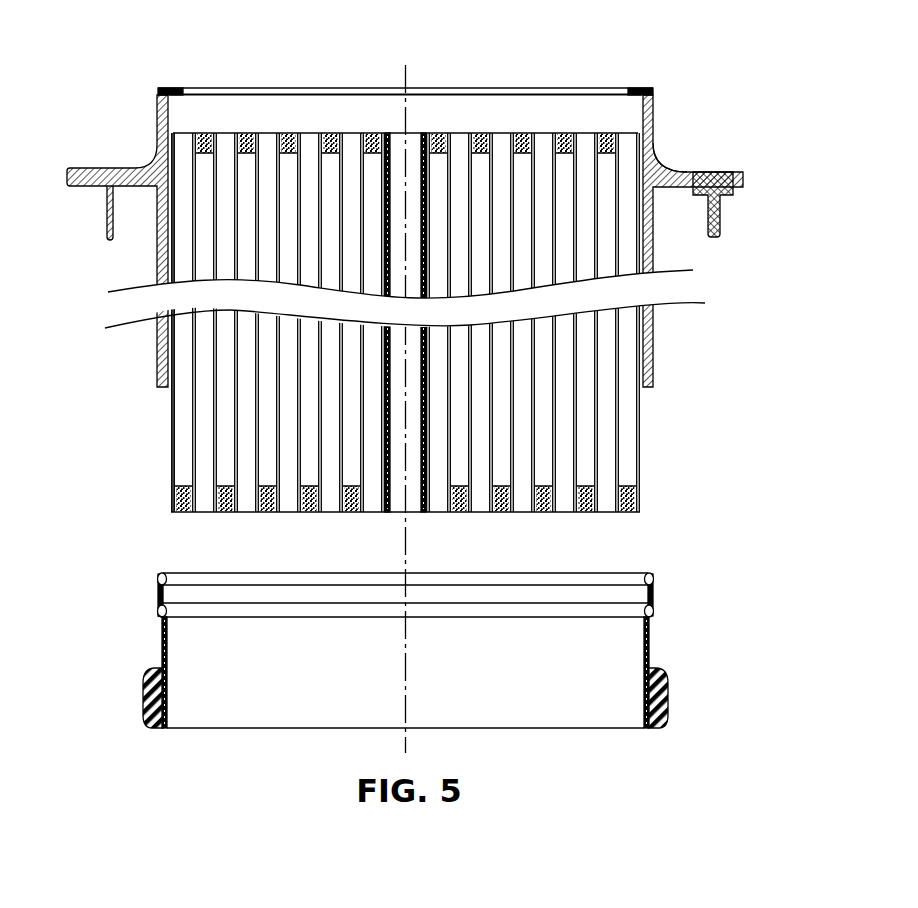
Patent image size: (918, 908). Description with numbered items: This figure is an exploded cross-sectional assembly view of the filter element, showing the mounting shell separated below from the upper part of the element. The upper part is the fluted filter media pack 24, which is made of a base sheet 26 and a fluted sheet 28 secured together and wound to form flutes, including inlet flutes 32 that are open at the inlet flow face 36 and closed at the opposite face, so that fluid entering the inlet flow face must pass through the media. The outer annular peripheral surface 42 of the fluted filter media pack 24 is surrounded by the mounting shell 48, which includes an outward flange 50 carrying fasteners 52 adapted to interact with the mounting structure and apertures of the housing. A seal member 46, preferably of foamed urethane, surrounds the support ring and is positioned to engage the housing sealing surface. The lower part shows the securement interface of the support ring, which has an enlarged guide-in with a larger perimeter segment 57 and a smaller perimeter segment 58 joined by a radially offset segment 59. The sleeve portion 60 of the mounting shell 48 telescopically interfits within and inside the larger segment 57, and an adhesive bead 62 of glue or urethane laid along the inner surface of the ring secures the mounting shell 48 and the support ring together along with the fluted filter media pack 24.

The fluted filter media pack 24 is at (460, 145).
The base sheet 26 is at (342, 151).
The fluted sheet 28 is at (314, 151).
The inlet flutes 32 is at (222, 165).
The inlet flow face 36 is at (482, 145).
The outer annular peripheral surface 42 is at (168, 322).
The seal member 46 is at (662, 690).
The mounting shell 48 is at (653, 255).
The outward flange 50 is at (681, 171).
The fasteners 52 is at (715, 176).
The larger perimeter segment 57 is at (159, 594).
The smaller perimeter segment 58 is at (161, 642).
The radially offset segment 59 is at (128, 606).
The sleeve portion 60 is at (653, 335).
The adhesive bead 62 is at (655, 578).